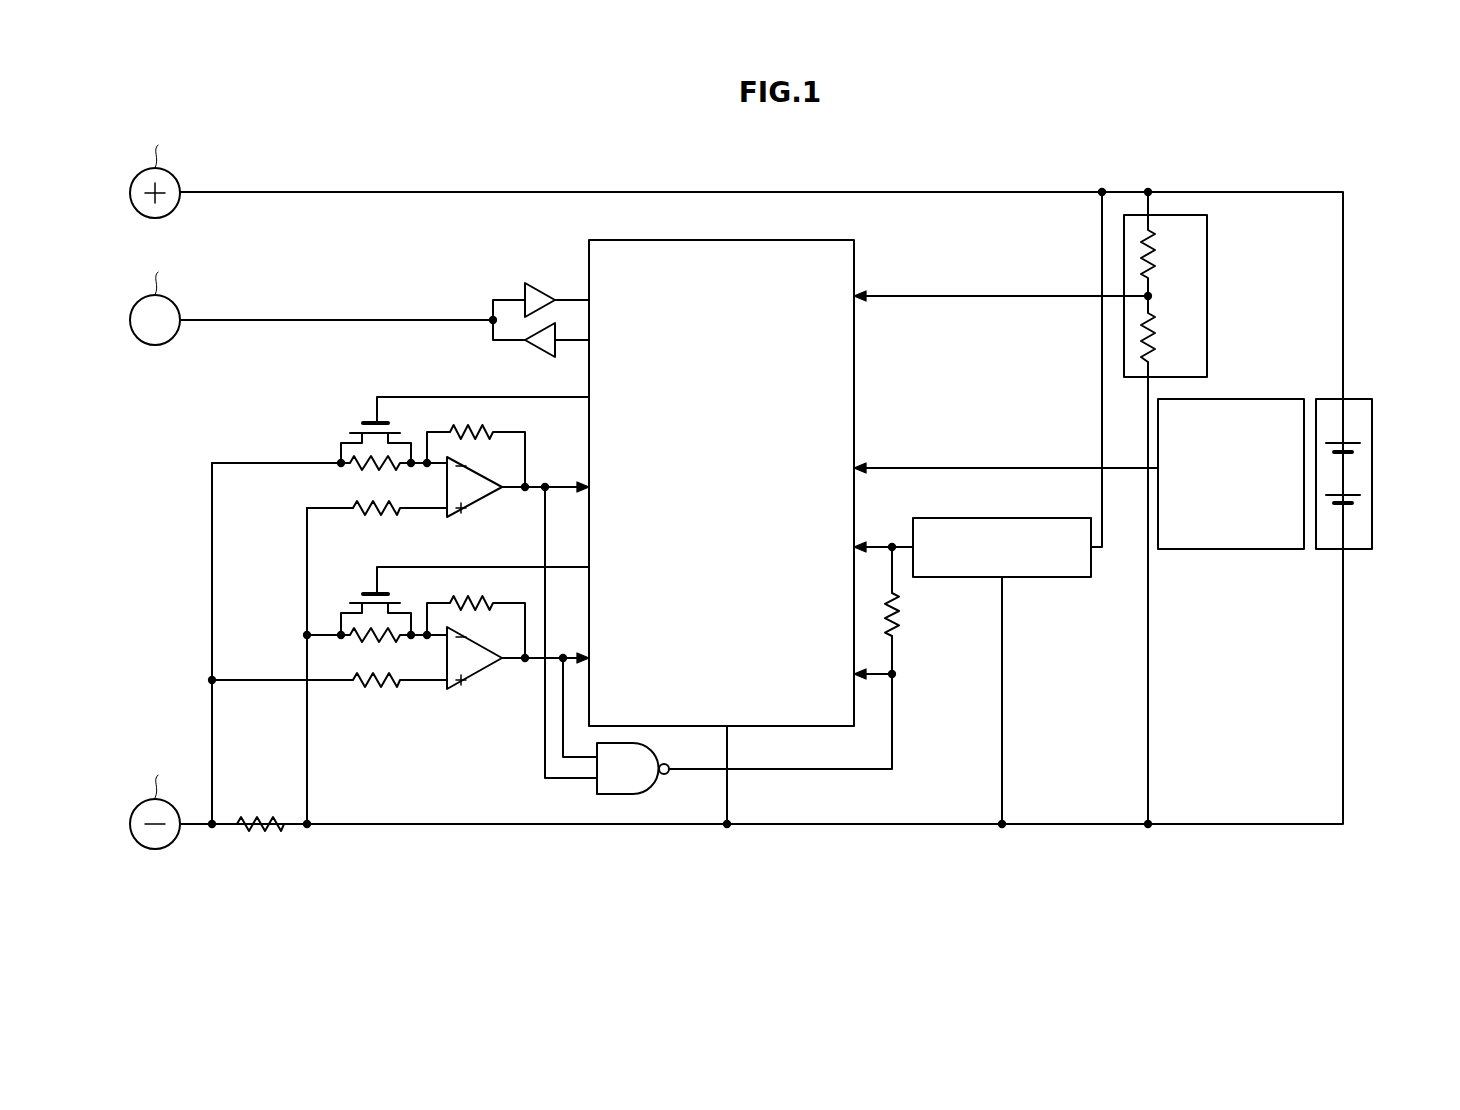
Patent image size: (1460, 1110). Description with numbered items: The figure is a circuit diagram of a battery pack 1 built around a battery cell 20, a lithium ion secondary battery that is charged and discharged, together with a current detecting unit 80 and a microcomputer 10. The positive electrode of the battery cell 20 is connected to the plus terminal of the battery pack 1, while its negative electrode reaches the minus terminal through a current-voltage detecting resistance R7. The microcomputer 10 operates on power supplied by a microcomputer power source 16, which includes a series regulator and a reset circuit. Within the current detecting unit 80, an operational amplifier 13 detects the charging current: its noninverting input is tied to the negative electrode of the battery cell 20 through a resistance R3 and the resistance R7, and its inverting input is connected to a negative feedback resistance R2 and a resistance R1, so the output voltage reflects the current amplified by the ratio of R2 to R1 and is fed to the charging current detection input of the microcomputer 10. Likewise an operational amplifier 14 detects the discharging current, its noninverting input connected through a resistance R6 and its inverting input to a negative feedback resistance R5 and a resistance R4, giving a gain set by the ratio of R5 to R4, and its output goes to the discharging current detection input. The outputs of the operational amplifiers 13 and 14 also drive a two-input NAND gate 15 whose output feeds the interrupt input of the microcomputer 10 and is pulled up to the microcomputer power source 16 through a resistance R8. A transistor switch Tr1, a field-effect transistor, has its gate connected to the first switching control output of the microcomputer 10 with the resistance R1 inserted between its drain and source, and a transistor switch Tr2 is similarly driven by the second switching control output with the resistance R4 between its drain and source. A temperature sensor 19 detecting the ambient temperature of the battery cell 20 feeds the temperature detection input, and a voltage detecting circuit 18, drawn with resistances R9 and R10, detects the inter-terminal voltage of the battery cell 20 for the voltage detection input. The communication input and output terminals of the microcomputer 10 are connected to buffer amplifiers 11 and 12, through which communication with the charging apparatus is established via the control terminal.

The battery pack 1 is at (324, 251).
The microcomputer 10 is at (758, 240).
The buffer amplifier 11 is at (540, 283).
The buffer amplifier 12 is at (536, 357).
The operational amplifier 13 is at (468, 510).
The operational amplifier 14 is at (470, 681).
The two-input NAND gate 15 is at (645, 792).
The microcomputer power source 16 is at (1000, 518).
The voltage detecting circuit 18 is at (1056, 284).
The temperature sensor 19 is at (1226, 549).
The battery cell 20 is at (1352, 549).
The current detecting unit 80 is at (503, 540).
The transistor switch Tr1 is at (350, 430).
The transistor switch Tr2 is at (350, 590).
The resistance R1 is at (329, 476).
The negative feedback resistance R2 is at (476, 445).
The resistance R3 is at (377, 520).
The resistance R4 is at (376, 647).
The negative feedback resistance R5 is at (476, 616).
The resistance R6 is at (328, 692).
The current-voltage detecting resistance R7 is at (259, 812).
The resistance for pull-up R8 is at (890, 610).
The resistor R9 is at (1162, 244).
The resistor R10 is at (1167, 336).